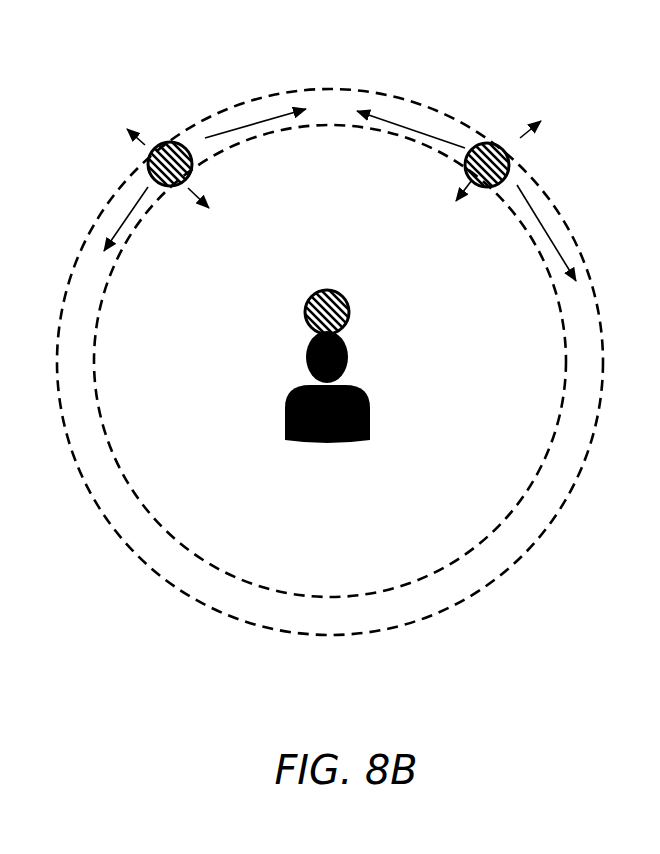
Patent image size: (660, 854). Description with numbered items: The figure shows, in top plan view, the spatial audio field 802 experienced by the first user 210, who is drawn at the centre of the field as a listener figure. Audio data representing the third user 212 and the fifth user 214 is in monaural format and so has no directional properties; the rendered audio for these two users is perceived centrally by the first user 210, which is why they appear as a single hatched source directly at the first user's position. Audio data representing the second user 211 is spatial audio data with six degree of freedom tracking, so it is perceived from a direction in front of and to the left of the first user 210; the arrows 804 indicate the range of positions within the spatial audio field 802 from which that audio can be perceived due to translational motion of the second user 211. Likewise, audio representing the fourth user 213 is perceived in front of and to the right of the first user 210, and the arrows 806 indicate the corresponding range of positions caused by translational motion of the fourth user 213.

The spatial audio field 802 is at (331, 90).
The arrows 804 is at (125, 220).
The arrows 806 is at (448, 133).
The second user 211 is at (160, 142).
The fourth user 213 is at (507, 147).
The third user 212 is at (312, 294).
The fifth user 214 is at (338, 294).
The first user 210 is at (338, 440).